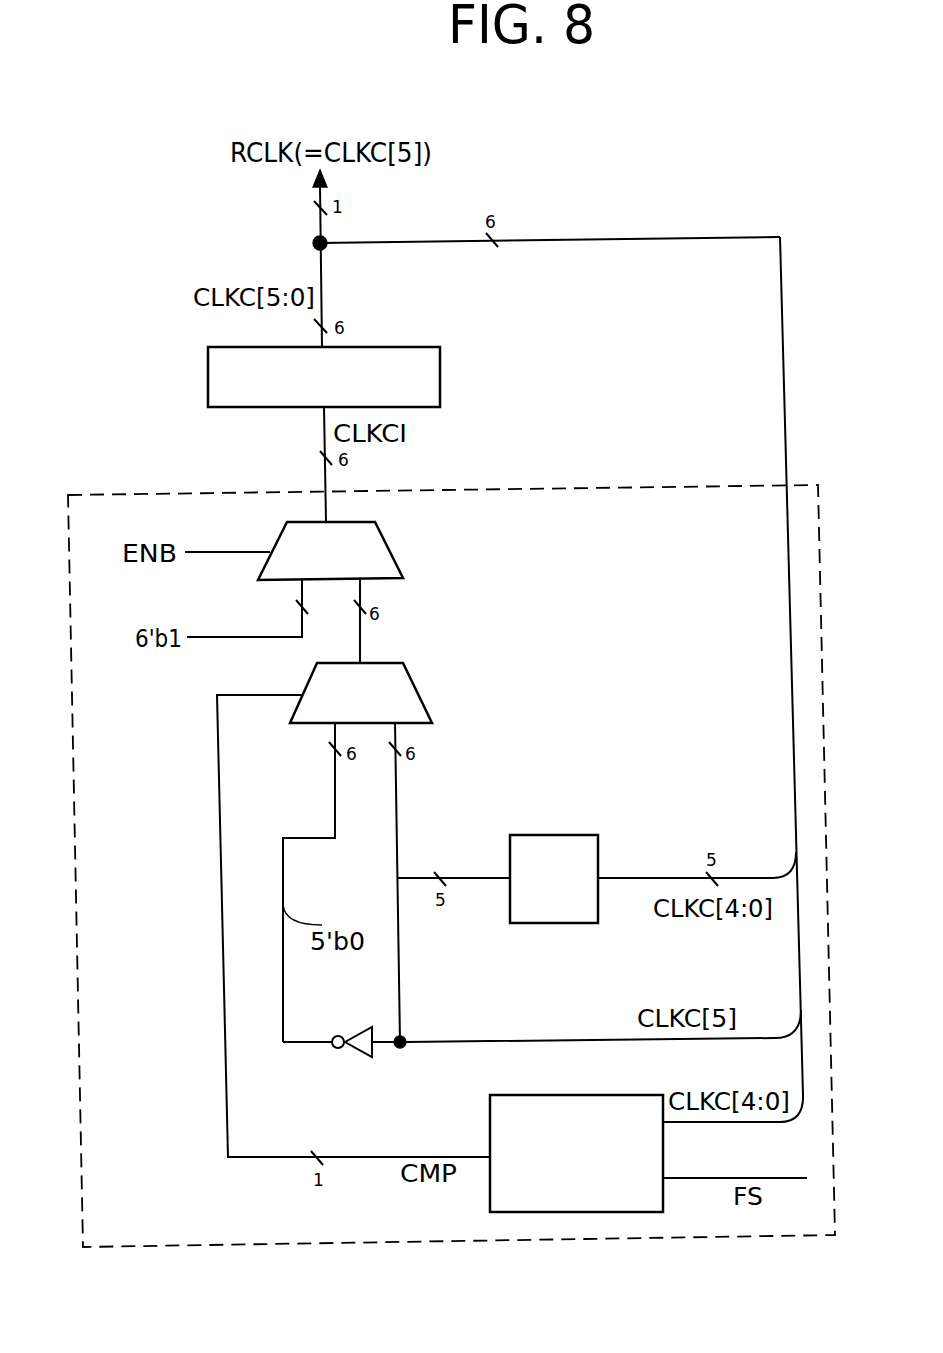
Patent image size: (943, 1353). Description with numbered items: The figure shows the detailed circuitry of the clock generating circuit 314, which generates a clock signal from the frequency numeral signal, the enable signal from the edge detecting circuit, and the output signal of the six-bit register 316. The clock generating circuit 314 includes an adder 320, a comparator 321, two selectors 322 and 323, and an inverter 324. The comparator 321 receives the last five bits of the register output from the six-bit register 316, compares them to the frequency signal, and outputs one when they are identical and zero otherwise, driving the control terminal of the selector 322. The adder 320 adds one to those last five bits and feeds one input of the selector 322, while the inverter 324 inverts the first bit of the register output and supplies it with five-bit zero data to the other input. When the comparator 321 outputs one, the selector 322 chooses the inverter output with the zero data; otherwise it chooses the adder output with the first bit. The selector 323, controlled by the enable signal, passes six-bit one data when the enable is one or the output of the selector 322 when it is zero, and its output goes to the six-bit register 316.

The clock generating circuit 314 is at (588, 485).
The 6-bit register 316 is at (208, 375).
The adder 320 is at (557, 835).
The comparator 321 is at (570, 1212).
The selector 322 is at (425, 695).
The selector 323 is at (385, 542).
The inverter 324 is at (364, 1058).